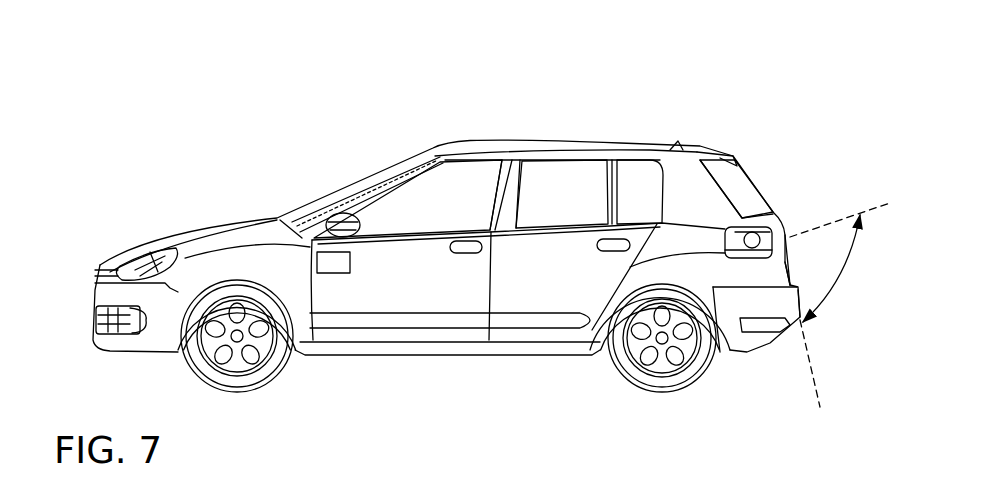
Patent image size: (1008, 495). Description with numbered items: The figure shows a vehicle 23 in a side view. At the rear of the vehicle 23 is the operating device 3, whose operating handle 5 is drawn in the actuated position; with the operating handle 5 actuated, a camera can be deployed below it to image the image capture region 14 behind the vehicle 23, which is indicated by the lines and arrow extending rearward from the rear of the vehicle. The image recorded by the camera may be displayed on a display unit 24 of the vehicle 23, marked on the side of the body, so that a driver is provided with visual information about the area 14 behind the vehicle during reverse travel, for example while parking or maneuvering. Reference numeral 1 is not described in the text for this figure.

The motor vehicle 1 is at (742, 192).
The operating device 3 is at (788, 207).
The operating handle 5 is at (787, 234).
The image capture region 14 is at (838, 278).
The vehicle 23 is at (460, 138).
The display unit 24 is at (340, 272).